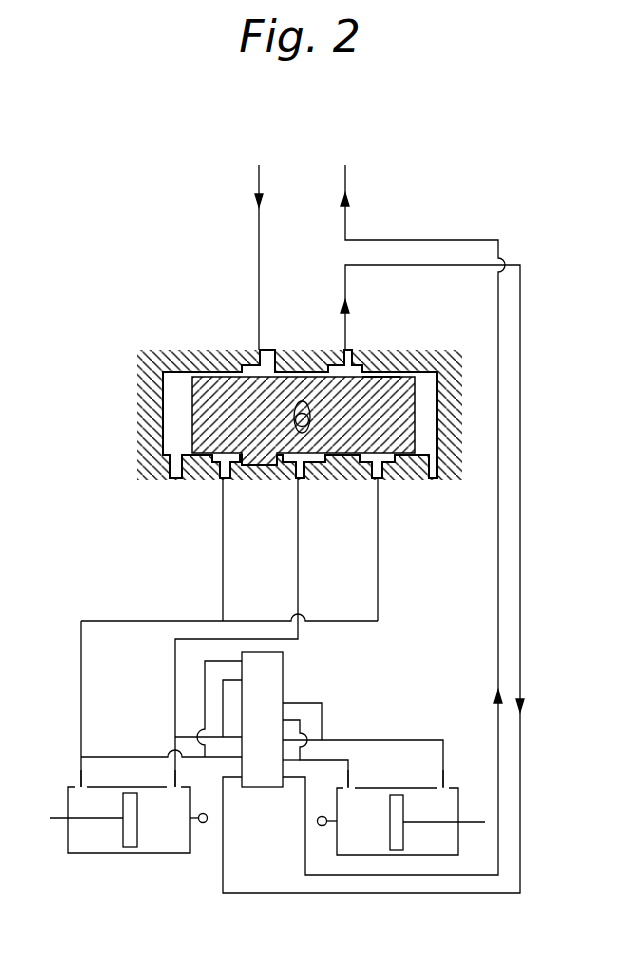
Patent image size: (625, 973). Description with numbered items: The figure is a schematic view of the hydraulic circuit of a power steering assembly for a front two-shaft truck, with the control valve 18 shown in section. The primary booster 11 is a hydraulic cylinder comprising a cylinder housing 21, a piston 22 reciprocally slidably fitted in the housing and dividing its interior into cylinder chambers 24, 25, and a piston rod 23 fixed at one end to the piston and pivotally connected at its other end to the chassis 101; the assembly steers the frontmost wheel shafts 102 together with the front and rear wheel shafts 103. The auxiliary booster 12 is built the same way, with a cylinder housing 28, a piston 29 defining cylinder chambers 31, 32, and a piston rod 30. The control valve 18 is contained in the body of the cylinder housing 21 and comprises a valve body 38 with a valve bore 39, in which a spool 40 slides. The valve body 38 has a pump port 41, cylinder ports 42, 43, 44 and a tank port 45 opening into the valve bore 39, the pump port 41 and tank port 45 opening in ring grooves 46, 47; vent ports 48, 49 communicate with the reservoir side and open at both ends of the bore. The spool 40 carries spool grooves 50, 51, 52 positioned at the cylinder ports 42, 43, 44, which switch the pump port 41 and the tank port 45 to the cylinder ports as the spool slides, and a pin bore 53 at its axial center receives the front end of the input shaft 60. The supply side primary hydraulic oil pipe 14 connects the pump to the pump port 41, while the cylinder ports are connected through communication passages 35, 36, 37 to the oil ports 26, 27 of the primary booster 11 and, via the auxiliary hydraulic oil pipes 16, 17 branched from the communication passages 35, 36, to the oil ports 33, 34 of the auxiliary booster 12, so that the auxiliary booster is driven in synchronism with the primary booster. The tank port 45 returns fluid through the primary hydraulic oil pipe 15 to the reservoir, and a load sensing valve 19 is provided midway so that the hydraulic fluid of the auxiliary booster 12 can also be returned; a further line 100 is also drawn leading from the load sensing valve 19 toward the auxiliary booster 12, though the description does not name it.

The primary booster 11 is at (115, 833).
The auxiliary booster 12 is at (430, 802).
The primary hydraulic oil pipe 14 is at (258, 230).
The primary hydraulic oil pipe 15 is at (346, 232).
The auxiliary hydraulic oil pipe 16 is at (184, 731).
The auxiliary hydraulic oil pipe 17 is at (109, 758).
The control valve 18 is at (449, 377).
The load sensing valve 19 is at (254, 734).
The cylinder housing 21 is at (70, 854).
The piston 22 is at (131, 854).
The piston rod 23 is at (56, 816).
The cylinder chamber 24 is at (155, 827).
The cylinder chamber 25 is at (85, 847).
The oil port 26 is at (166, 786).
The oil port 27 is at (75, 786).
The cylinder housing 28 is at (457, 851).
The piston 29 is at (398, 795).
The piston rod 30 is at (445, 822).
The cylinder chamber 31 is at (423, 852).
The cylinder chamber 32 is at (352, 842).
The oil port 33 is at (446, 786).
The oil port 34 is at (346, 786).
The communication passage 35 is at (299, 560).
The communication passage 36 is at (224, 560).
The communication passage 37 is at (379, 560).
The valve body 38 is at (178, 364).
The valve bore 39 is at (162, 374).
The spool 40 is at (440, 378).
The pump port 41 is at (258, 362).
The cylinder port 42 is at (262, 467).
The cylinder port 43 is at (200, 463).
The cylinder port 44 is at (380, 469).
The tank port 45 is at (350, 360).
The ring groove 46 is at (292, 374).
The ring groove 47 is at (385, 366).
The vent port 48 is at (170, 471).
The vent port 49 is at (438, 471).
The spool groove 50 is at (312, 471).
The spool groove 51 is at (226, 474).
The spool groove 52 is at (395, 471).
The pin bore 53 is at (306, 402).
The input shaft 60 is at (298, 402).
The signal line 100 is at (324, 700).
The chassis 101 is at (304, 718).
The frontmost wheel shafts 102 is at (223, 708).
The front and rear wheel shafts 103 is at (205, 680).